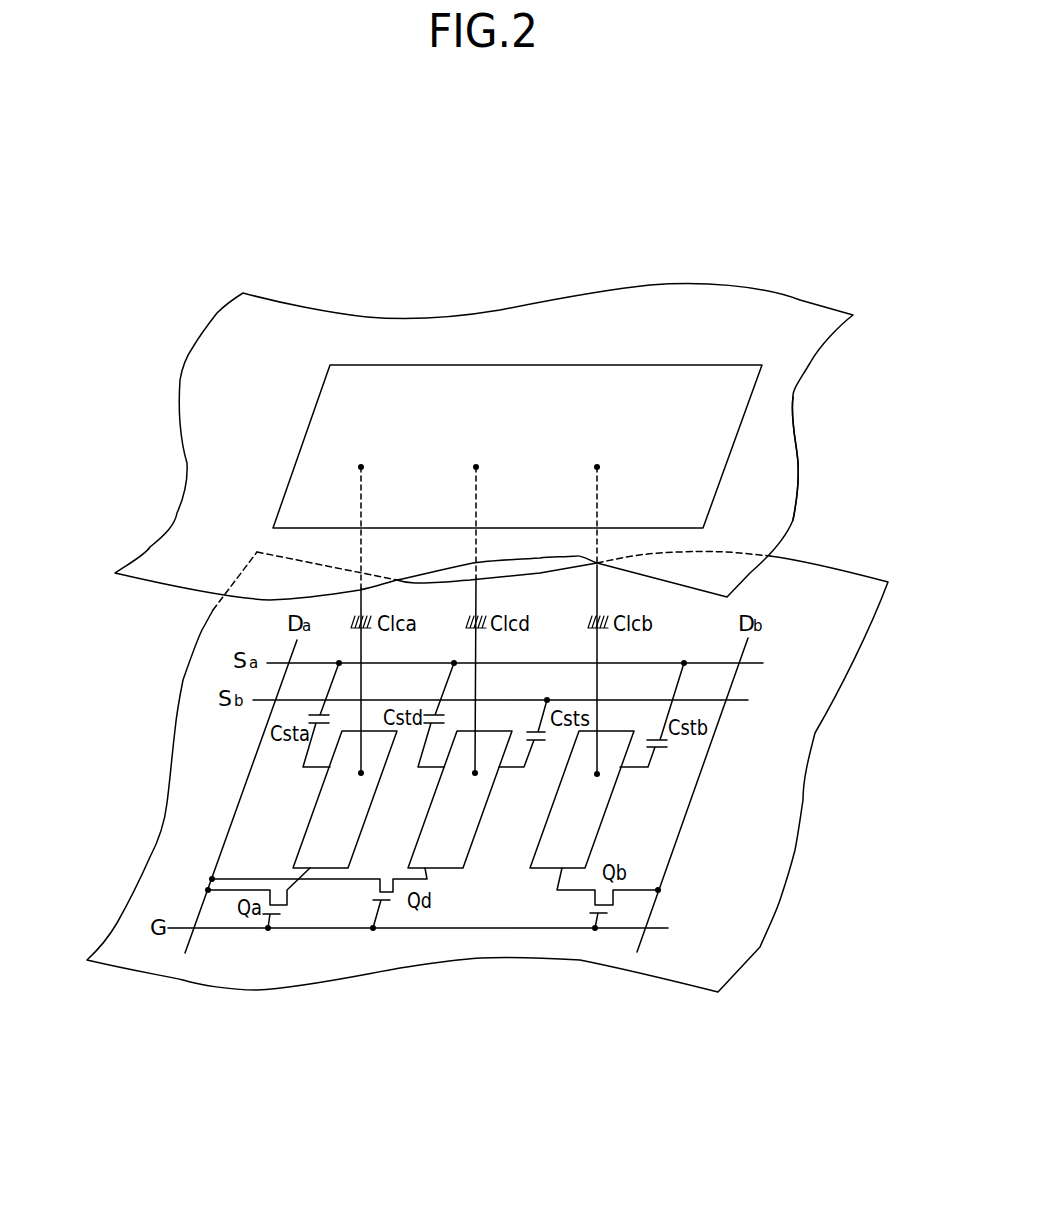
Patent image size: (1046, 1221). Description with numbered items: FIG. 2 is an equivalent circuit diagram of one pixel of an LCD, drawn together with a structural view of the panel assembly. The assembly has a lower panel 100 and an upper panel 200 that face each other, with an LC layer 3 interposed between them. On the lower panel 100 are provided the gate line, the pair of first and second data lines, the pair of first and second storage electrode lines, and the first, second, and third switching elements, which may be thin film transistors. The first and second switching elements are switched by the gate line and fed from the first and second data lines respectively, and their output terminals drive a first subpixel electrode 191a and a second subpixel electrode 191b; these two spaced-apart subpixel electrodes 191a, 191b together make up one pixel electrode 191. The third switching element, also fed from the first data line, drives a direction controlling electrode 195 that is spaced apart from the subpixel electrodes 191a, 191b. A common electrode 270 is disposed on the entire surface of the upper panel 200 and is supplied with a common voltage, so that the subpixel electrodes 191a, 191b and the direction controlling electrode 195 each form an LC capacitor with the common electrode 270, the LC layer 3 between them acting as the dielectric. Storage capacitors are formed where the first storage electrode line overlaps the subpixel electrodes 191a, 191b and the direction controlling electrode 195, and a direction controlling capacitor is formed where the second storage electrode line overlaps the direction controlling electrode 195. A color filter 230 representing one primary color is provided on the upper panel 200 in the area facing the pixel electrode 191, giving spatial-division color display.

The LC layer 3 is at (129, 674).
The lower panel 100 is at (820, 735).
The upper panel 200 is at (802, 467).
The color filter 230 is at (657, 365).
The common electrode 270 is at (793, 420).
The pixel electrode 191 is at (857, 1035).
The first subpixel electrode 191a is at (311, 818).
The second subpixel electrode 191b is at (603, 817).
The direction controlling electrode 195 is at (475, 838).